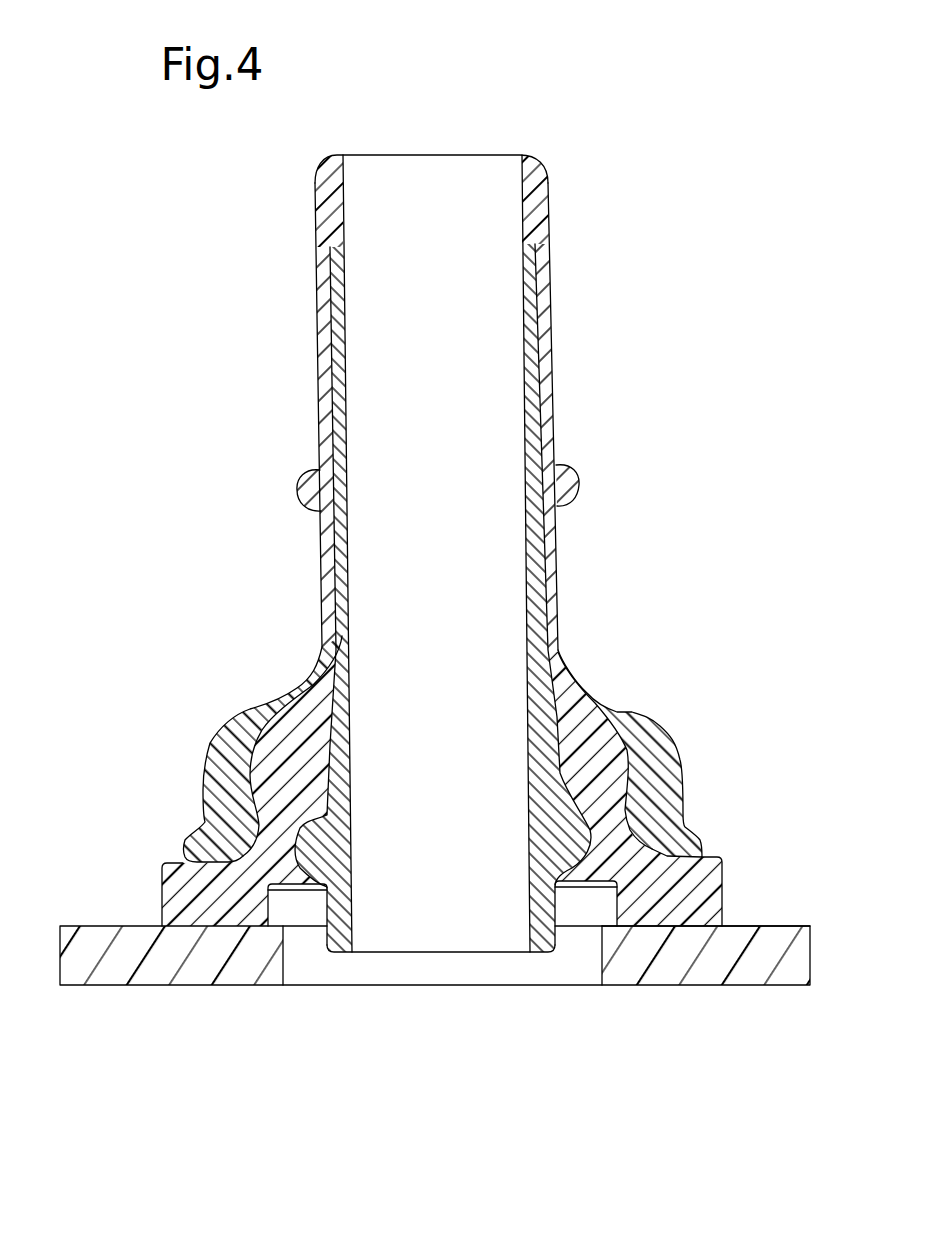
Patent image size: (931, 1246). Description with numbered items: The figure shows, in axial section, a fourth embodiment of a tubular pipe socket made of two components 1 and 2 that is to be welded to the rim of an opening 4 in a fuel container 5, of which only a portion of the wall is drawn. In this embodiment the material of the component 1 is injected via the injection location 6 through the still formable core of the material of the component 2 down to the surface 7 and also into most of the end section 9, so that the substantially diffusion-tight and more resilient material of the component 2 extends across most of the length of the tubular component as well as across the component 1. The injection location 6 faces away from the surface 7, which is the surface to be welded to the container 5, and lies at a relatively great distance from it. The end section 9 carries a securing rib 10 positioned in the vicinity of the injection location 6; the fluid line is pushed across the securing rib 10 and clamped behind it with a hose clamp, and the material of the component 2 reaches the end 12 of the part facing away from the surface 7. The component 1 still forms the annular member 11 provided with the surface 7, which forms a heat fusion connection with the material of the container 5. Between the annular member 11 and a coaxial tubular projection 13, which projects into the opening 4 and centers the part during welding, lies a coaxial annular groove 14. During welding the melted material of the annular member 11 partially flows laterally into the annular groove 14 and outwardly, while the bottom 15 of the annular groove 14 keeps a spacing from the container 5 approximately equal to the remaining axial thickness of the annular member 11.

The first component 1 is at (617, 793).
The second component 2 is at (657, 712).
The opening 4 is at (285, 953).
The container 5 is at (130, 985).
The injection location 6 is at (550, 536).
The surface 7 is at (667, 923).
The end section 9 is at (555, 377).
The securing rib 10 is at (572, 471).
The annular member 11 is at (722, 888).
The end 12 is at (533, 155).
The tubular projection 13 is at (545, 950).
The annular groove 14 is at (580, 907).
The bottom 15 is at (600, 883).